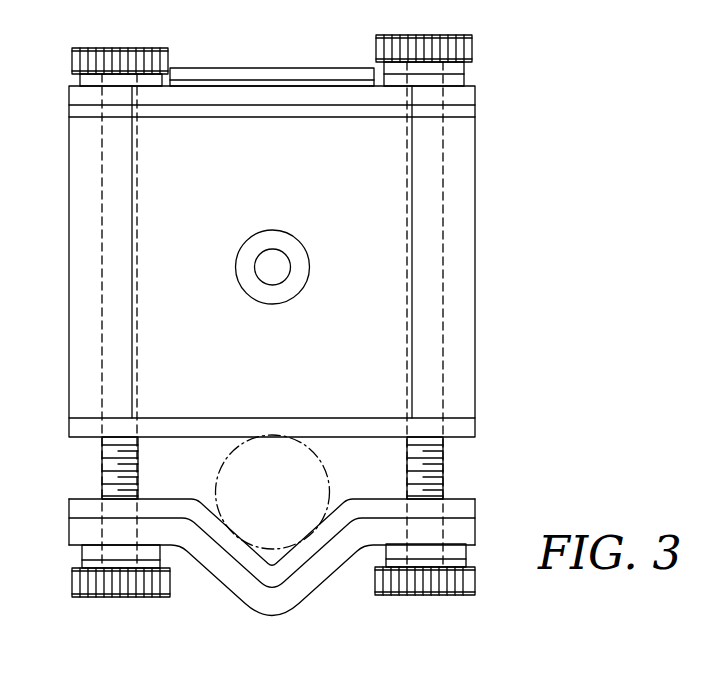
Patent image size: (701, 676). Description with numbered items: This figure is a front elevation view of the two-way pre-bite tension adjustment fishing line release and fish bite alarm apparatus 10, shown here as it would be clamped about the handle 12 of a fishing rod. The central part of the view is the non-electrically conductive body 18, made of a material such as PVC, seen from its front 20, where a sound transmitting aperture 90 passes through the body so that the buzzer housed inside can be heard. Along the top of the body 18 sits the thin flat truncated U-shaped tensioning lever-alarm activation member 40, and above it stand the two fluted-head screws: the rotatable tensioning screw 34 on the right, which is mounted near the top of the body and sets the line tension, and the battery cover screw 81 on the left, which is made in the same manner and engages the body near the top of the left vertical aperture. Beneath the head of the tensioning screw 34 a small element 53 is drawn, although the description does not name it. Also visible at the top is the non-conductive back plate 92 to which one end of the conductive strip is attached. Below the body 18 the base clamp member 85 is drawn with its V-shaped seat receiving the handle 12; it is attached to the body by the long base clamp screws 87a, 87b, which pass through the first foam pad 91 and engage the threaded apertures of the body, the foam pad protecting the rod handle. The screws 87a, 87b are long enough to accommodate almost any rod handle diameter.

The fishing line release and bite alarm apparatus 10 is at (281, 327).
The handle 12 is at (230, 450).
The body 18 is at (477, 275).
The front 20 is at (152, 200).
The tensioning screw 34 is at (472, 50).
The tensioning lever-alarm activation member 40 is at (477, 97).
The washer 53 is at (465, 74).
The battery cover screw 81 is at (72, 58).
The base clamp member 85 is at (302, 590).
The base clamp screw 87a is at (445, 452).
The base clamp screw 87b is at (100, 457).
The sound transmitting aperture 90 is at (290, 258).
The first foam pad 91 is at (472, 508).
The back plate 92 is at (258, 69).